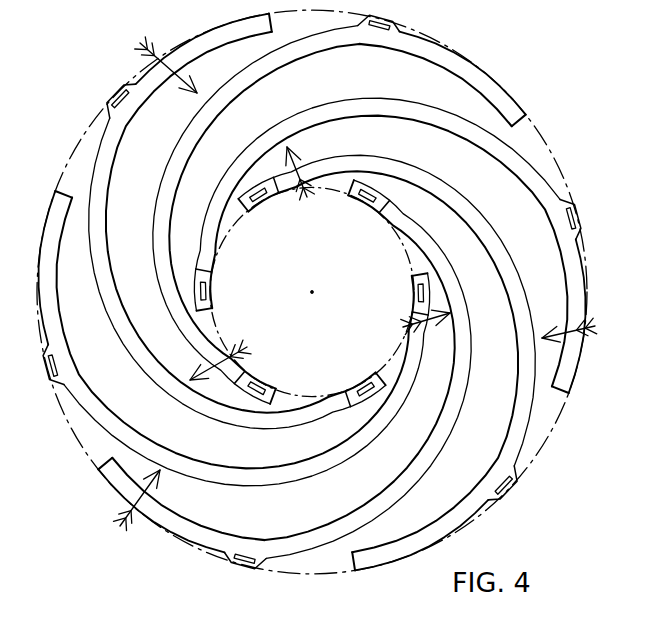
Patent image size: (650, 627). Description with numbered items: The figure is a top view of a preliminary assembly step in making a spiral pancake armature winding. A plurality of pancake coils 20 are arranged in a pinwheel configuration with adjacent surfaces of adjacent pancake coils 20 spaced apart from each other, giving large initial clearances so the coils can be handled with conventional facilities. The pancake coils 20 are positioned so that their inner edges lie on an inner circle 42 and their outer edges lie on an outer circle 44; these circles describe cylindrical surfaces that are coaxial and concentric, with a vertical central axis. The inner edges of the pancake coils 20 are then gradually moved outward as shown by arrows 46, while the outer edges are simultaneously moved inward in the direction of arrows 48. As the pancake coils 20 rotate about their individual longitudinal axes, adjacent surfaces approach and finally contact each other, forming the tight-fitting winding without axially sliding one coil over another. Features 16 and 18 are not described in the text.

The inner tab of blade 16 is at (258, 207).
The outer tab of blade 18 is at (114, 94).
The pancake coil 20 is at (109, 178).
The inner circle 42 is at (399, 352).
The outer circle 44 is at (72, 165).
The arrows 46 is at (300, 188).
The arrows 48 is at (161, 51).